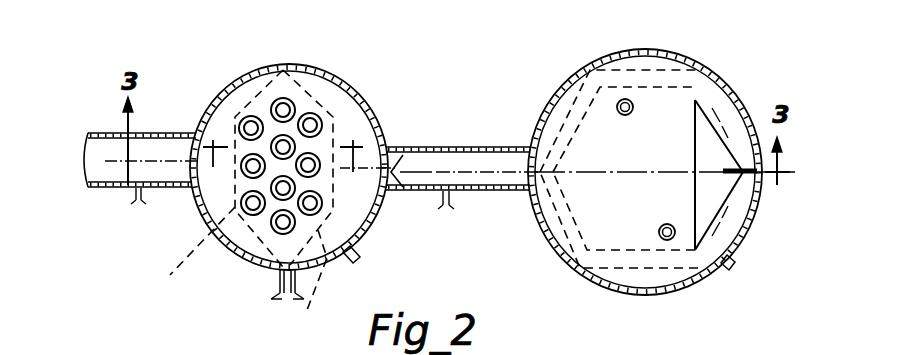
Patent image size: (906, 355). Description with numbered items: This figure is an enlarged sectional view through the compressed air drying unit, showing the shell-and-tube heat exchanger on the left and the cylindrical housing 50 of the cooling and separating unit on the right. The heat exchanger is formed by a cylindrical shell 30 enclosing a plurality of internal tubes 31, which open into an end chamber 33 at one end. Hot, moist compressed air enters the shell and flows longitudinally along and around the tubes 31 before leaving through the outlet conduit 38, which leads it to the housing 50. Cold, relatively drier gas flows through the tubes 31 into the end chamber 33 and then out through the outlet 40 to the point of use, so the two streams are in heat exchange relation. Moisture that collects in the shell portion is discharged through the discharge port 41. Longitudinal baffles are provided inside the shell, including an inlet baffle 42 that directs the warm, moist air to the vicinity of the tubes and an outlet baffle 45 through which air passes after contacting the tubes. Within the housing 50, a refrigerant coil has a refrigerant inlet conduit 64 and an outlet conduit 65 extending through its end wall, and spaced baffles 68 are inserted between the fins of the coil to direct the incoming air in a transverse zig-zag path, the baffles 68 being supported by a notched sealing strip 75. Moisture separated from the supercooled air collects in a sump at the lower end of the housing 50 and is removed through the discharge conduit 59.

The cylindrical housing or shell 30 is at (363, 96).
The internal tubes 31 is at (311, 122).
The end chamber 33 is at (352, 207).
The outlet conduit 38 is at (448, 148).
The outlet 40 is at (152, 132).
The discharge port 41 is at (352, 256).
The inlet baffle 42 is at (184, 248).
The outlet baffle 45 is at (317, 282).
The housing 50 is at (708, 67).
The discharge conduit 59 is at (738, 264).
The refrigerant inlet conduit 64 is at (627, 116).
The refrigerant outlet conduit 65 is at (658, 231).
The baffles 68 is at (702, 137).
The notched sealing strip 75 is at (756, 210).